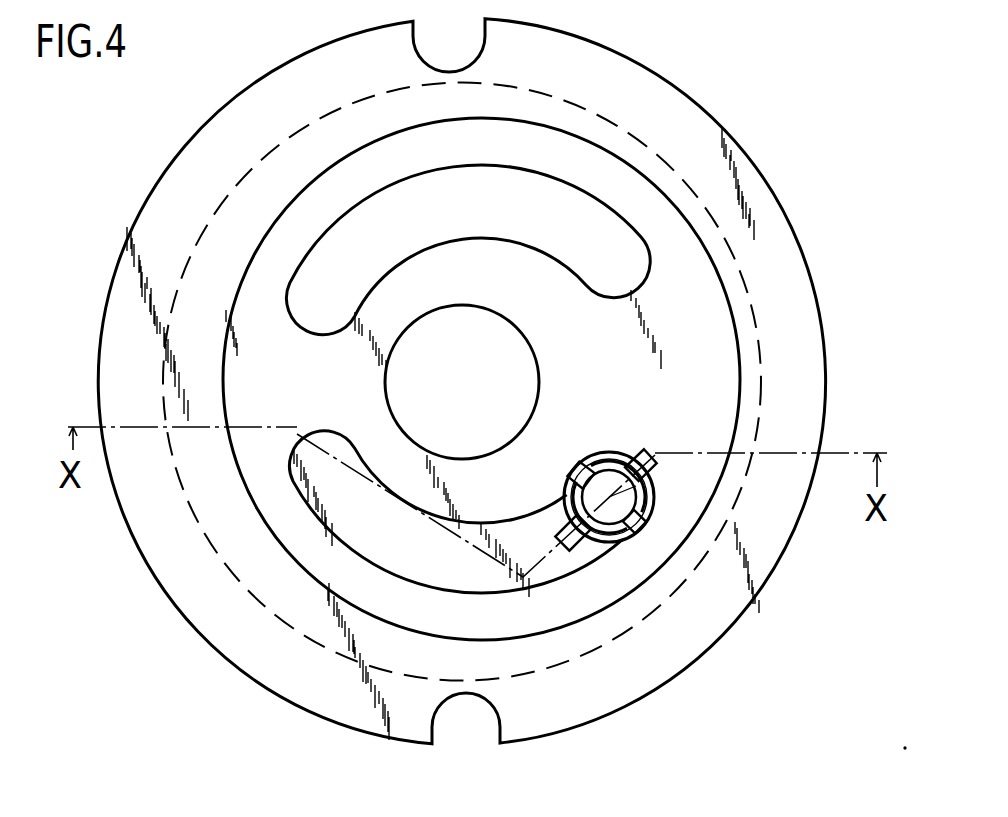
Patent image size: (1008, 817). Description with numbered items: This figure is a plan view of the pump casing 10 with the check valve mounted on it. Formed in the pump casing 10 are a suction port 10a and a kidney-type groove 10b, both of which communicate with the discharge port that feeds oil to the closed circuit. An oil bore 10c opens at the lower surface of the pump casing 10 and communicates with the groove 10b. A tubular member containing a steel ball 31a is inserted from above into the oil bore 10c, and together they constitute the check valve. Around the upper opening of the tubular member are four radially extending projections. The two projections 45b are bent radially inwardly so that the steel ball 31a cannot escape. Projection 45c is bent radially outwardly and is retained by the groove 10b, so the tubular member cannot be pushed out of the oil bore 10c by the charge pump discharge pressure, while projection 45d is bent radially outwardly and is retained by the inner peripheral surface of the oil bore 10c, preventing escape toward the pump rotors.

The pump casing 10 is at (746, 194).
The suction port 10a is at (586, 196).
The kidney-type groove 10b is at (368, 556).
The oil bore 10c is at (608, 452).
The steel ball 31a is at (648, 490).
The projections 45b is at (566, 486).
The projection 45c is at (584, 552).
The projection 45d is at (648, 458).